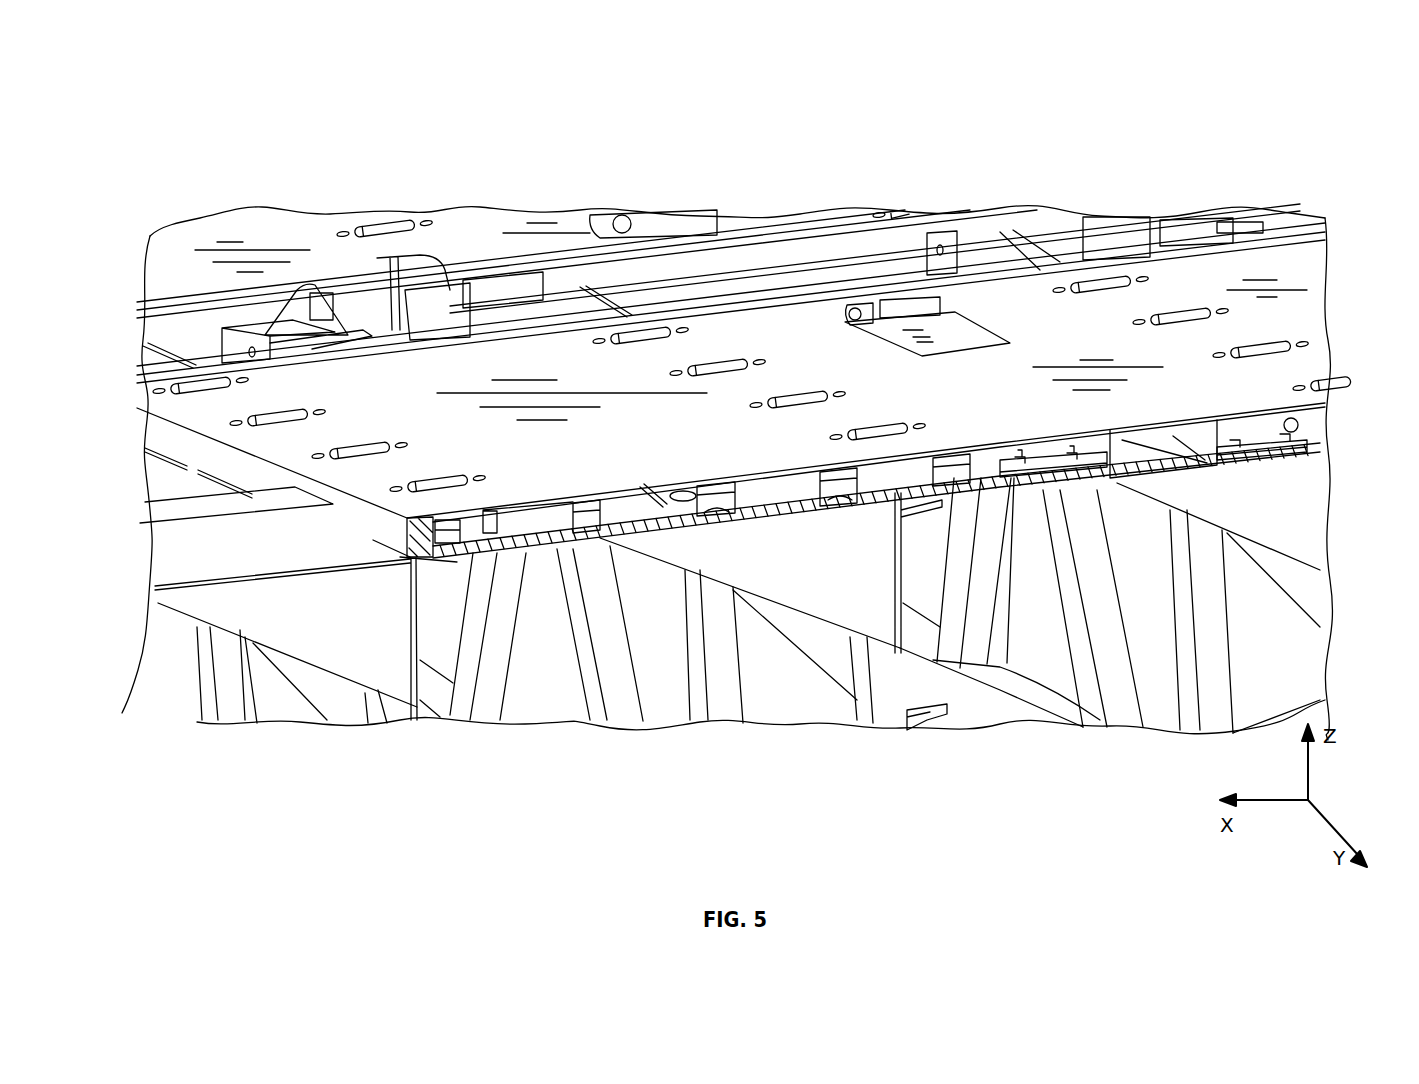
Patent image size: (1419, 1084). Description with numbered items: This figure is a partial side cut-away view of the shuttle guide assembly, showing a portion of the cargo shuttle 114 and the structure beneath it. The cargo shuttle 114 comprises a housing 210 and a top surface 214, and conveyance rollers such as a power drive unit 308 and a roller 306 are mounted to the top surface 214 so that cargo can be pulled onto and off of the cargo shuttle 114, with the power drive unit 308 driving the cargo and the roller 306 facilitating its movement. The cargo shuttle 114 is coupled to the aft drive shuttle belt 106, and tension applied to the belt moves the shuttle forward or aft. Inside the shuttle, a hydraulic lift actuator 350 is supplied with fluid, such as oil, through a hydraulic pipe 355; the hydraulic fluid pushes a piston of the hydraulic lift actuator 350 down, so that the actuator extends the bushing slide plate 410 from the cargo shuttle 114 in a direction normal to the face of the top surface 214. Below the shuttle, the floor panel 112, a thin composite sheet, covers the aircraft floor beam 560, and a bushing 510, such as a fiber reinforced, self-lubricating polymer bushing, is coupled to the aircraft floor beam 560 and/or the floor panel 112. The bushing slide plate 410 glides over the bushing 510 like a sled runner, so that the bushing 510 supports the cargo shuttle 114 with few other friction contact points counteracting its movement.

The aft drive shuttle belt 106 is at (155, 508).
The floor panel 112 is at (227, 542).
The cargo shuttle 114 is at (1268, 328).
The housing 210 is at (816, 378).
The top surface 214 is at (1275, 290).
The roller 306 is at (1175, 318).
The power drive unit 308 is at (940, 333).
The hydraulic lift actuator 350 is at (715, 510).
The hydraulic pipe 355 is at (873, 477).
The bushing slide plate 410 is at (752, 524).
The bushing 510 is at (427, 560).
The aircraft floor beam 560 is at (387, 640).